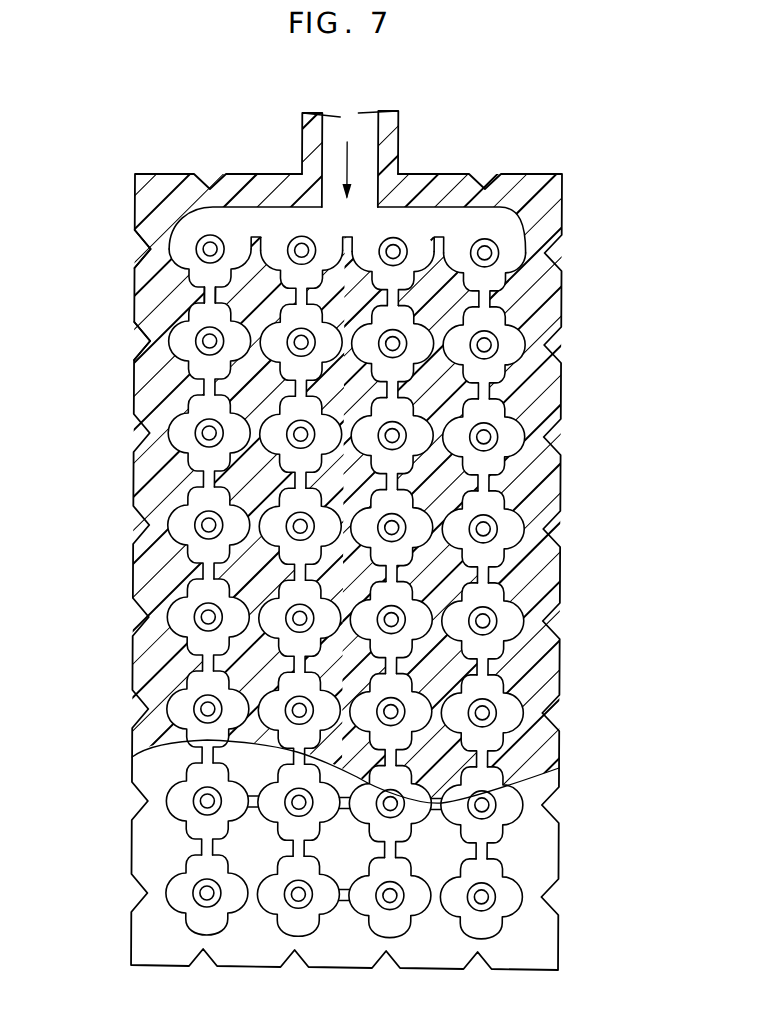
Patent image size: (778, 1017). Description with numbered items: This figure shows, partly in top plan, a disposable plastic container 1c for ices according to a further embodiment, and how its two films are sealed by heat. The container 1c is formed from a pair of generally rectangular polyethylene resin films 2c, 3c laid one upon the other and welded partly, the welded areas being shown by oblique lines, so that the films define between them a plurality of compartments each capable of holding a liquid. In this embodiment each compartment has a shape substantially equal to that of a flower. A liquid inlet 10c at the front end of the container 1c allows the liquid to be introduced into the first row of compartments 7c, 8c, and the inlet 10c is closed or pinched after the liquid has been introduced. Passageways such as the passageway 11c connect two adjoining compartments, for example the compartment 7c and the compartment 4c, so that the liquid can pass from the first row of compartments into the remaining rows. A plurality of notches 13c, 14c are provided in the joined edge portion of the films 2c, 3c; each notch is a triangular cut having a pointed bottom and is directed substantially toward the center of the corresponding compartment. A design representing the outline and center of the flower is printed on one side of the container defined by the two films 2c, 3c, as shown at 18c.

The disposable plastic container 1c is at (585, 272).
The film 2c is at (145, 768).
The film 3c is at (143, 735).
The compartment 4c is at (178, 348).
The compartment 7c is at (178, 245).
The compartment 8c is at (278, 233).
The liquid inlet 10c is at (367, 128).
The passageway 11c is at (203, 294).
The notch 13c is at (141, 247).
The notch 14c is at (140, 342).
The printed design 18c is at (175, 808).